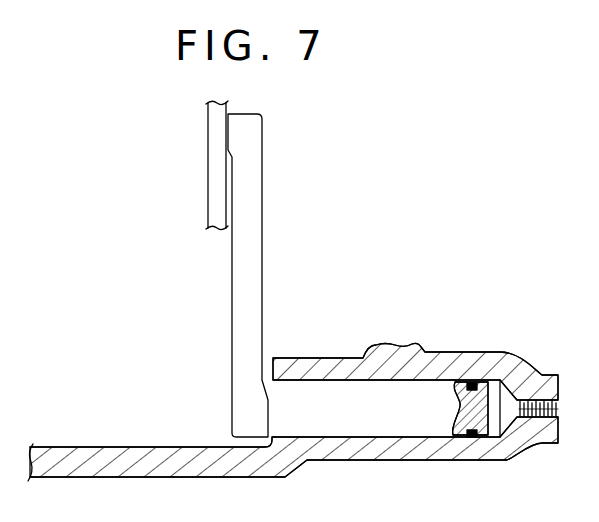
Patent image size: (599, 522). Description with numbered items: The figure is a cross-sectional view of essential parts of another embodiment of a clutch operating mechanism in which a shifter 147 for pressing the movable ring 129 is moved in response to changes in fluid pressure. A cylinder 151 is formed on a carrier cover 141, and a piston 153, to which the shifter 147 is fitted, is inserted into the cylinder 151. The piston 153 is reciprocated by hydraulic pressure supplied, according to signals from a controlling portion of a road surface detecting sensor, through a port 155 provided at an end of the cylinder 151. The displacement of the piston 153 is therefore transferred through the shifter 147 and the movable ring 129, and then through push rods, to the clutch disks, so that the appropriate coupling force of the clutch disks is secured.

The movable ring 129 is at (212, 156).
The shifter 147 is at (262, 158).
The carrier cover 141 is at (401, 457).
The cylinder 151 is at (437, 439).
The piston 153 is at (442, 393).
The port 155 is at (537, 420).